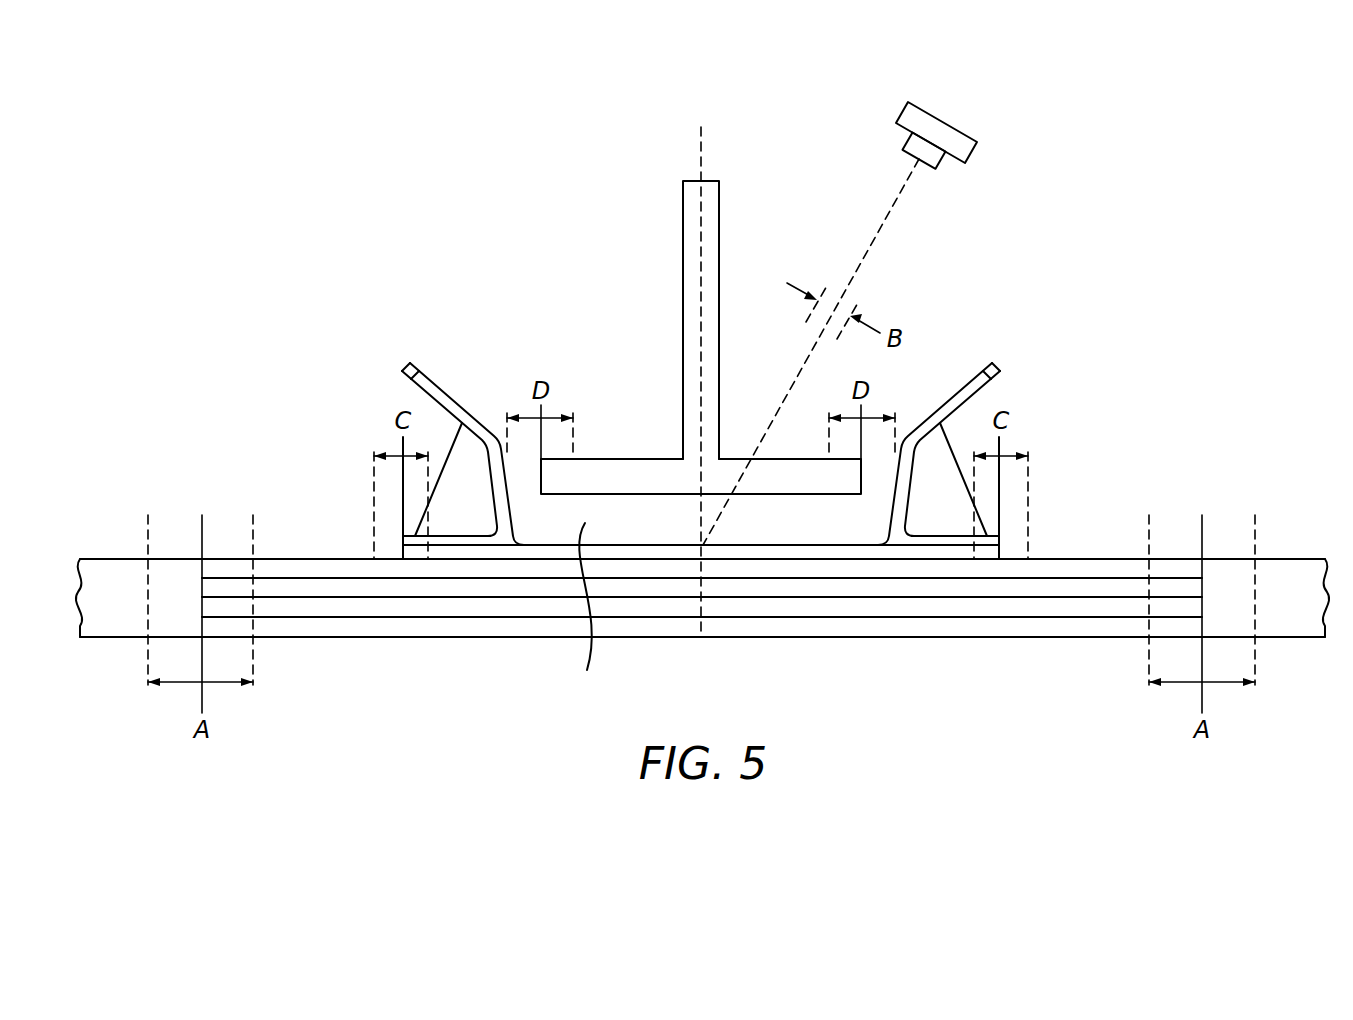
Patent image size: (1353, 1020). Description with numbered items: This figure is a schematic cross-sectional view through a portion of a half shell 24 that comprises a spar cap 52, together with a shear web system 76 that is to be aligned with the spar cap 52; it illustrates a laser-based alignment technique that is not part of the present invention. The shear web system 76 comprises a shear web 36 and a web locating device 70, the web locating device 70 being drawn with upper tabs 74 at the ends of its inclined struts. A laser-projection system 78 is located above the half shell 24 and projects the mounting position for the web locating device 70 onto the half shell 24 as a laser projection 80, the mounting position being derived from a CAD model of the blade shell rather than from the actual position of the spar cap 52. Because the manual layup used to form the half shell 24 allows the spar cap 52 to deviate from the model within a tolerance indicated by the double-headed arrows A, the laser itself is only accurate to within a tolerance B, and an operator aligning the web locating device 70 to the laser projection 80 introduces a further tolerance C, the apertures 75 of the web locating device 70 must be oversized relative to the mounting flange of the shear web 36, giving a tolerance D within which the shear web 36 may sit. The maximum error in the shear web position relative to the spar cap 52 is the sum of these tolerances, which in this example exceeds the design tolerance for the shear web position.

The half shell 24 is at (1108, 516).
The shear web 36 is at (683, 232).
The spar cap 52 is at (783, 642).
The web locating device 70 is at (481, 412).
The bracket tab 74 is at (406, 366).
The aperture 75 is at (580, 610).
The shear web system 76 is at (572, 270).
The laser-projection system 78 is at (967, 135).
The laser projection 80 is at (893, 207).